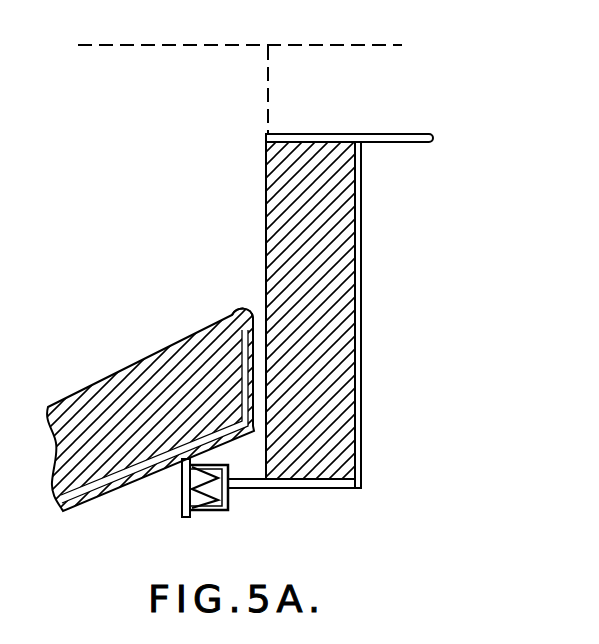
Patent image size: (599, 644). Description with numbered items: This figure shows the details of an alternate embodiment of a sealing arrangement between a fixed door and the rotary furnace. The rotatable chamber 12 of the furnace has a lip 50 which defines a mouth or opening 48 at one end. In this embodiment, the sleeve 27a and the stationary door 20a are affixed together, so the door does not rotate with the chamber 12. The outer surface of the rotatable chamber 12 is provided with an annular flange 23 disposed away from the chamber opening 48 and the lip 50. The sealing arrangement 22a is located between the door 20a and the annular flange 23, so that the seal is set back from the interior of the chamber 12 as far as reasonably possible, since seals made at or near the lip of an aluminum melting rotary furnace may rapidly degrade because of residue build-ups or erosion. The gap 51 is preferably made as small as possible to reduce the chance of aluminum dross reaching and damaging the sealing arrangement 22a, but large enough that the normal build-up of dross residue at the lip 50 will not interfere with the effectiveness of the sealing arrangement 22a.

The chamber 12 is at (67, 514).
The door 20a is at (373, 383).
The sealing arrangement 22a is at (240, 517).
The annular flange 23 is at (184, 515).
The sleeve 27a is at (393, 133).
The opening 48 is at (245, 178).
The lip 50 is at (240, 309).
The gap 51 is at (258, 305).